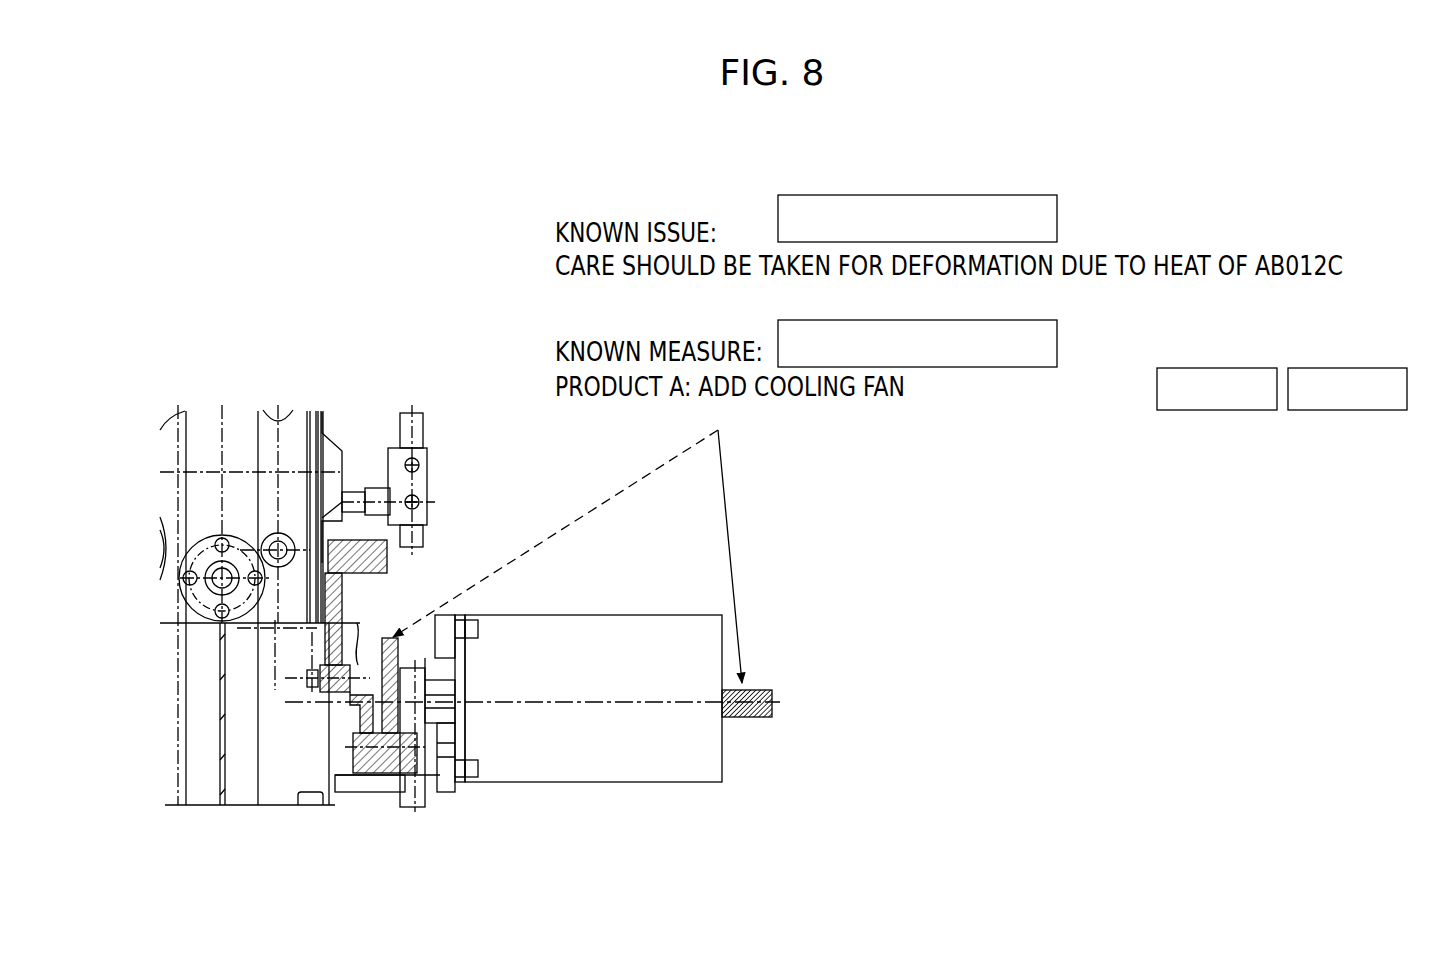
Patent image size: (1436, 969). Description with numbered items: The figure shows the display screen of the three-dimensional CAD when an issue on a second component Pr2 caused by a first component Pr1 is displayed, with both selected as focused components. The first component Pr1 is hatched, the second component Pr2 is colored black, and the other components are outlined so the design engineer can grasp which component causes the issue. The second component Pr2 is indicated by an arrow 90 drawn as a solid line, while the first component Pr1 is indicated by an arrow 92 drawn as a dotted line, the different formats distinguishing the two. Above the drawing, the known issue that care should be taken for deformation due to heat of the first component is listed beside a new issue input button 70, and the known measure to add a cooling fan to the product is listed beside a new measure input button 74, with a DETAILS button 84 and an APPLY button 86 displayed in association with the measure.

The new issue input button 70 is at (1060, 219).
The new measure input button 74 is at (1060, 343).
The DETAILS button 84 is at (1232, 362).
The APPLY button 86 is at (1344, 362).
The arrow 90 is at (725, 551).
The arrow 92 is at (548, 537).
The first component Pr1 is at (360, 529).
The second component Pr2 is at (749, 729).